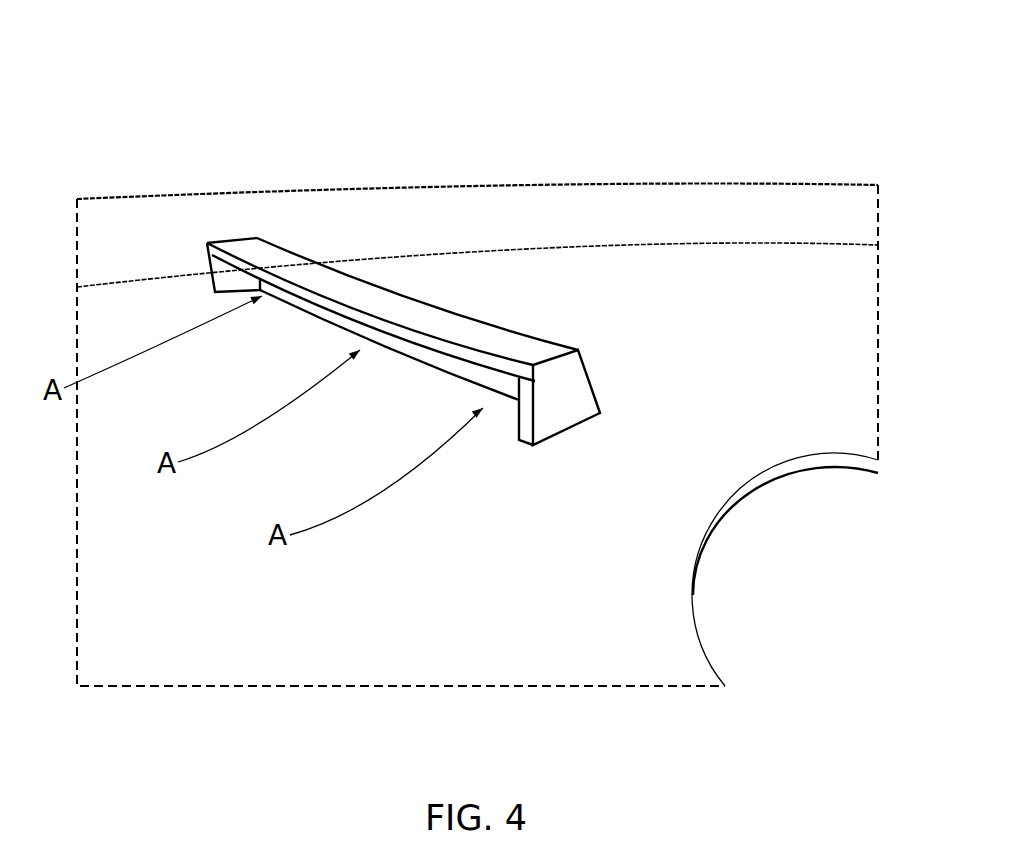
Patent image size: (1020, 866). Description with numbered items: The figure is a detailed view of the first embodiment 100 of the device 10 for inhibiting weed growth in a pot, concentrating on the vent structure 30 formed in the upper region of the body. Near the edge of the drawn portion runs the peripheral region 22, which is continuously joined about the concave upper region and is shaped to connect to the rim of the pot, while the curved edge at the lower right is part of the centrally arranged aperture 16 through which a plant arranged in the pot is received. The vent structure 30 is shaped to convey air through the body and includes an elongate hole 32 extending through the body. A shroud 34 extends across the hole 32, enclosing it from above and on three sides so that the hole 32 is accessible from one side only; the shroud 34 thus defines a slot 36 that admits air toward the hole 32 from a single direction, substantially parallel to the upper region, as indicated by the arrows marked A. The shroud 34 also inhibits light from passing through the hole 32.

The device 10 is at (477, 356).
The first embodiment 100 is at (760, 108).
The peripheral region 22 is at (547, 183).
The aperture 16 is at (810, 590).
The vent structure 30 is at (462, 341).
The elongate hole 32 is at (460, 373).
The shroud 34 is at (554, 373).
The slot 36 is at (238, 301).